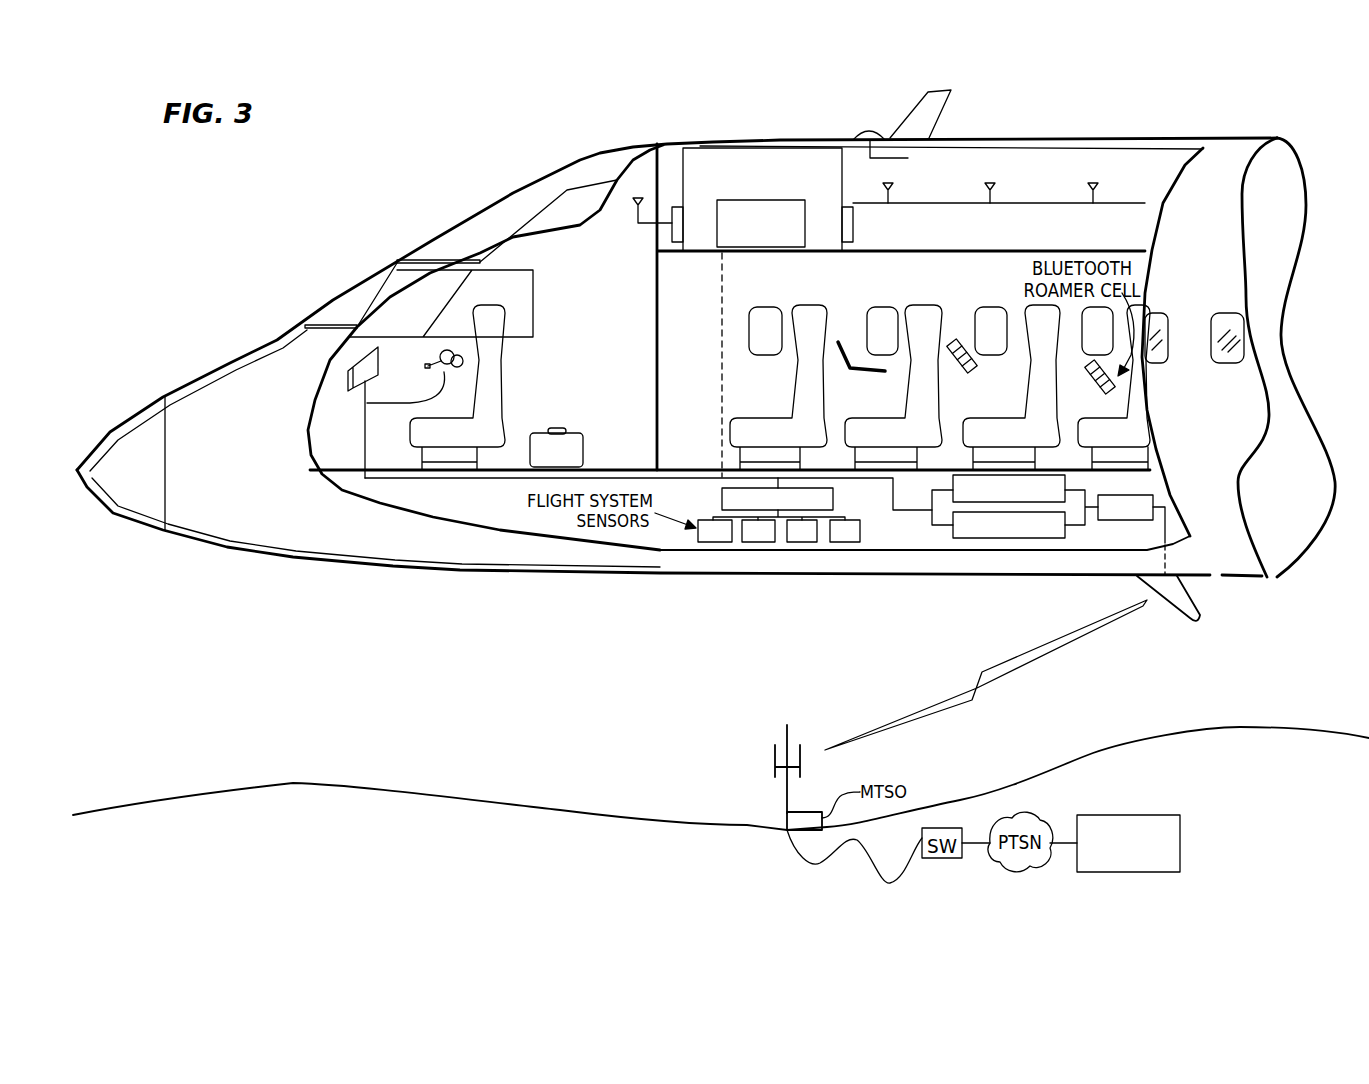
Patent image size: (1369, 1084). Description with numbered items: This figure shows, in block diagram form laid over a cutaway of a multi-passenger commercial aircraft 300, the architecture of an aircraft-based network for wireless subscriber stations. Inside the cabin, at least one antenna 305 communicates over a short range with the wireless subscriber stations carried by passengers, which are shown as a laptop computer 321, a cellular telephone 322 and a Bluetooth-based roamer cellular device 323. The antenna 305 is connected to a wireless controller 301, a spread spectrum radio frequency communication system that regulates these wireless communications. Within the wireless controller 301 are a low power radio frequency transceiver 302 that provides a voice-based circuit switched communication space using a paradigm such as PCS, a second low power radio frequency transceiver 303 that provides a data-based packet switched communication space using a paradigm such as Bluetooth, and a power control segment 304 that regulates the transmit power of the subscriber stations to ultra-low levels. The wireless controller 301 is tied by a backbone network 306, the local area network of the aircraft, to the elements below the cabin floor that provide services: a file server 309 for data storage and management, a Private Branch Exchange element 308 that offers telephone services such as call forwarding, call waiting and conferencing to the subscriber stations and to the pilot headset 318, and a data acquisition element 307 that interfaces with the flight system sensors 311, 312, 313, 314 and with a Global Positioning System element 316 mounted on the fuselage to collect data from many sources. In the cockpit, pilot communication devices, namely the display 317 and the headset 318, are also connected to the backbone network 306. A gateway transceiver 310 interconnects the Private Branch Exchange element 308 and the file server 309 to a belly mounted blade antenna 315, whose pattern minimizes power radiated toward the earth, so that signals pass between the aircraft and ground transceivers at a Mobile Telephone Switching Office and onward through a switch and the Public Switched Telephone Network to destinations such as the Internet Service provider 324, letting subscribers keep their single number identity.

The multi-passenger commercial aircraft 300 is at (220, 546).
The wireless controller 301 is at (683, 174).
The low power radio frequency transceiver 302 is at (853, 225).
The low power radio frequency transceiver 303 is at (671, 231).
The power control segment 304 is at (717, 220).
The antenna 305 is at (996, 186).
The backbone network 306 is at (492, 478).
The data acquisition element 307 is at (835, 498).
The Private Branch Exchange element 308 is at (932, 525).
The file server 309 is at (1030, 538).
The gateway transceiver 310 is at (1115, 520).
The flight system sensor 311 is at (703, 542).
The flight system sensor 312 is at (748, 542).
The flight system sensor 313 is at (793, 542).
The flight system sensor 314 is at (837, 542).
The antenna 315 is at (1200, 618).
The Global Positioning System element 316 is at (870, 132).
The display 317 is at (353, 375).
The headset 318 is at (440, 357).
The laptop computer 321 is at (847, 344).
The cellular telephone 322 is at (960, 341).
The Bluetooth-based roamer cellular device 323 is at (1108, 392).
The Internet Service provider 324 is at (1148, 815).